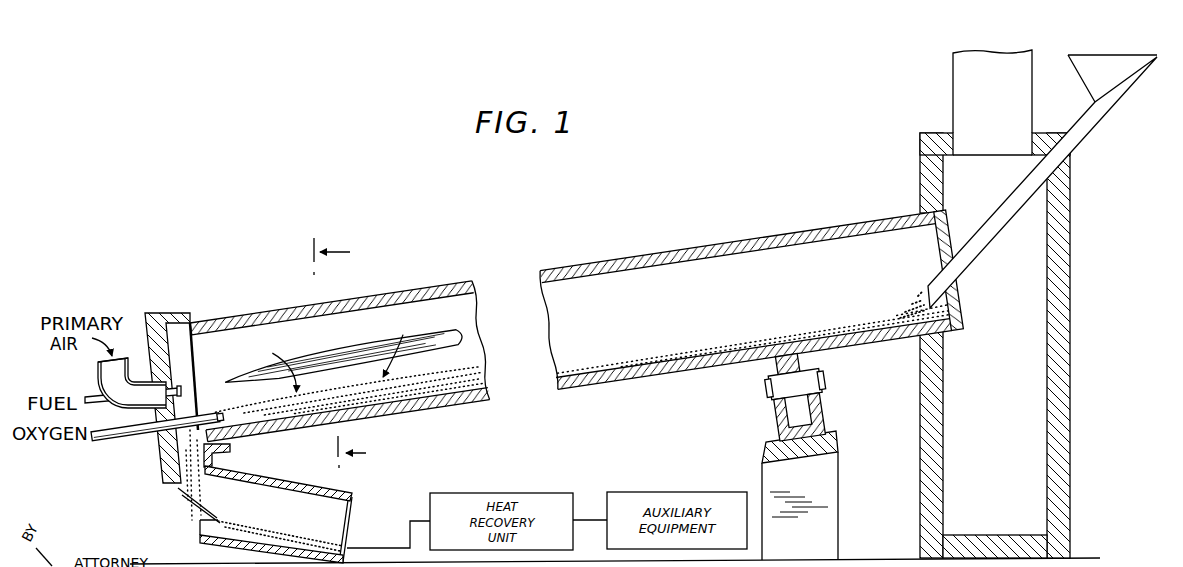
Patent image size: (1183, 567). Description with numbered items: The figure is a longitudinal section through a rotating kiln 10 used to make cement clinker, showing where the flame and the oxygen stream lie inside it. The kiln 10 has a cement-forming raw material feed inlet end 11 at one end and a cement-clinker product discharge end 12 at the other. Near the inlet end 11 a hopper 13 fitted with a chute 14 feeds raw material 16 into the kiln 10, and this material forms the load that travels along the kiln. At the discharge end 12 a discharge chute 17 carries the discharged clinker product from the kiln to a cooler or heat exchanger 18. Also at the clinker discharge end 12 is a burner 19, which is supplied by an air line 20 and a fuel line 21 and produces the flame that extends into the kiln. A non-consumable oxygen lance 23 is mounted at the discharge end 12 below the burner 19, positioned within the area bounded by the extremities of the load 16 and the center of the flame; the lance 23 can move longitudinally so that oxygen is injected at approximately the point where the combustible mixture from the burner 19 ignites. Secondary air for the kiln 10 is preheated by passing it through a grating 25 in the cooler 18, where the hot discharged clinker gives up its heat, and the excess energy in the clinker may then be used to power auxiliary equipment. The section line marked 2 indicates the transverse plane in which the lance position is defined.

The section line 2- 2 is at (350, 353).
The rotating kiln 10 is at (546, 263).
The raw material feed inlet end 11 is at (965, 306).
The cement-clinker product discharge end 12 is at (193, 323).
The hopper 13 is at (1134, 77).
The chute 14 is at (1003, 219).
The raw material 16 is at (910, 299).
The discharge chute 17 is at (217, 459).
The cooler or heat exchanger 18 is at (352, 496).
The burner 19 is at (100, 378).
The air line 20 is at (124, 360).
The fuel line 21 is at (115, 400).
The non-consumable oxygen lance 23 is at (117, 439).
The grating 25 is at (348, 541).